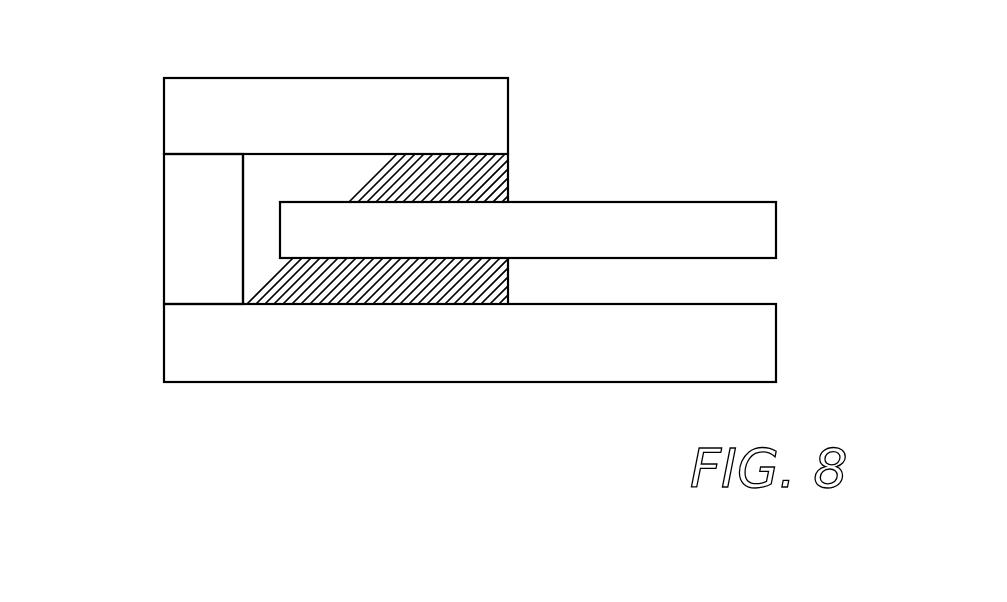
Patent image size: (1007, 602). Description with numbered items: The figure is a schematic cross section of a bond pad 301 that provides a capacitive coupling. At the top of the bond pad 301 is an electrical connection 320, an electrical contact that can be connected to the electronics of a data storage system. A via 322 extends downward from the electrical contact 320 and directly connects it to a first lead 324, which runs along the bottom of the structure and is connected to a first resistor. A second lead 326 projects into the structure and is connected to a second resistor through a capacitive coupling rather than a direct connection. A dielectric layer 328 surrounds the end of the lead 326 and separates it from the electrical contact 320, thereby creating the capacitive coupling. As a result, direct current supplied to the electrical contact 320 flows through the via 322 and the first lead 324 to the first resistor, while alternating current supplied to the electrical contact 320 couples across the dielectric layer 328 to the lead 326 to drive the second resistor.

The bond pad 301 is at (146, 85).
The electrical connection 320 is at (509, 127).
The via 322 is at (165, 216).
The first lead 324 is at (777, 340).
The lead 326 is at (777, 231).
The dielectric layer 328 is at (509, 178).